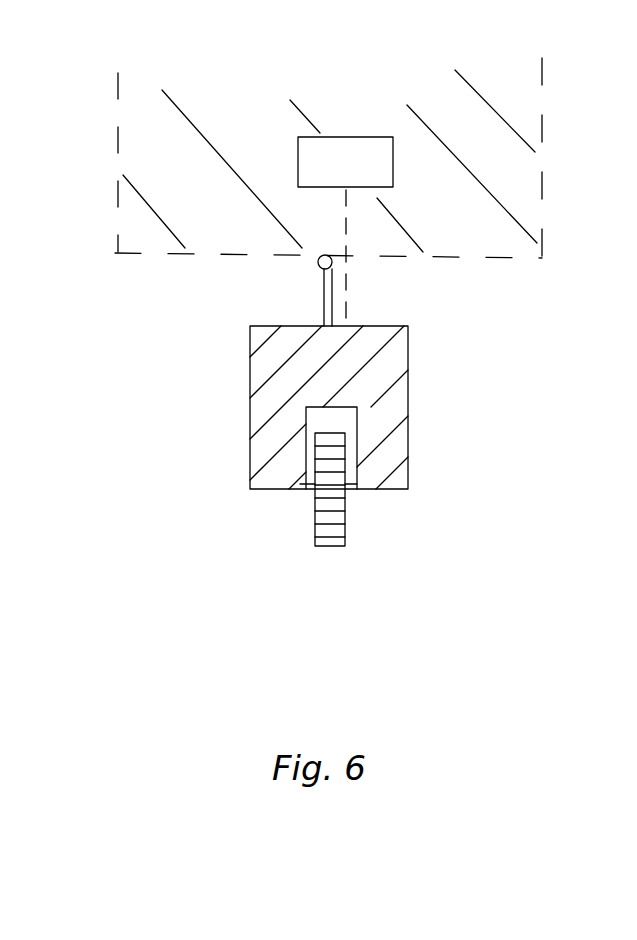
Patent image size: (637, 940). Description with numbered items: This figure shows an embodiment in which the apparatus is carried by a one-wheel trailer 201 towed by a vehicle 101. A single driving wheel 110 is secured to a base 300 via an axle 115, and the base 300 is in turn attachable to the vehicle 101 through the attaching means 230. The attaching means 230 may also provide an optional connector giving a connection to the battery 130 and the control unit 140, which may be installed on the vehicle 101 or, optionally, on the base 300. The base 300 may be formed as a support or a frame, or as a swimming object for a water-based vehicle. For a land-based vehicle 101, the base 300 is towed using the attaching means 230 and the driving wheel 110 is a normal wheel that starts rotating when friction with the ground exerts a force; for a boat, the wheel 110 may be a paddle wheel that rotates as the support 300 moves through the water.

The vehicle 101 is at (137, 100).
The battery 130 is at (370, 189).
The control unit 140 is at (327, 143).
The one-wheel trailer 201 is at (253, 425).
The attaching means 230 is at (328, 282).
The base 300 is at (403, 350).
The axle 115 is at (310, 490).
The driving wheel 110 is at (340, 515).